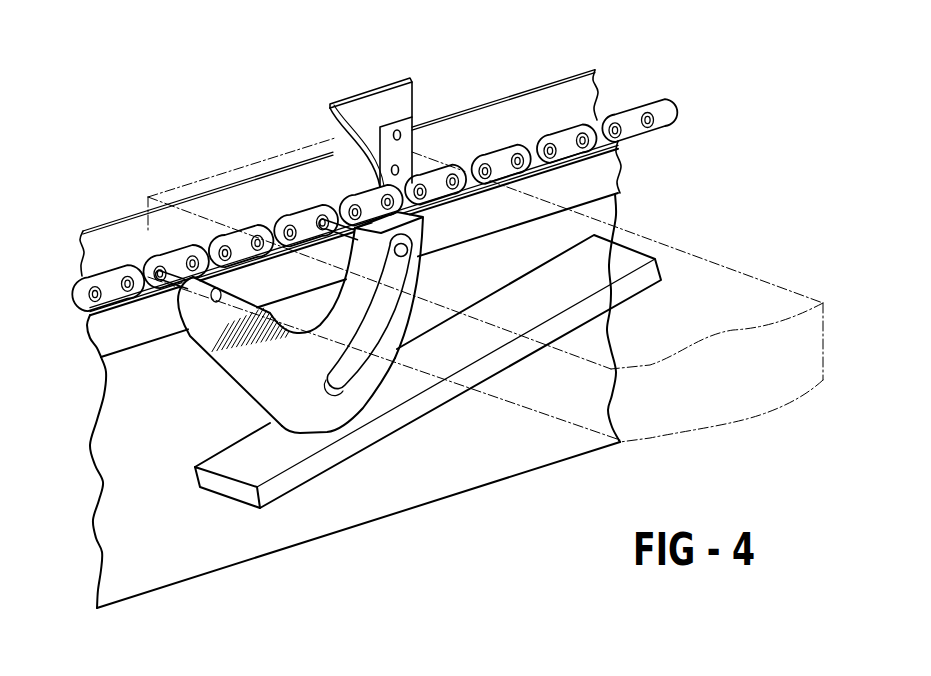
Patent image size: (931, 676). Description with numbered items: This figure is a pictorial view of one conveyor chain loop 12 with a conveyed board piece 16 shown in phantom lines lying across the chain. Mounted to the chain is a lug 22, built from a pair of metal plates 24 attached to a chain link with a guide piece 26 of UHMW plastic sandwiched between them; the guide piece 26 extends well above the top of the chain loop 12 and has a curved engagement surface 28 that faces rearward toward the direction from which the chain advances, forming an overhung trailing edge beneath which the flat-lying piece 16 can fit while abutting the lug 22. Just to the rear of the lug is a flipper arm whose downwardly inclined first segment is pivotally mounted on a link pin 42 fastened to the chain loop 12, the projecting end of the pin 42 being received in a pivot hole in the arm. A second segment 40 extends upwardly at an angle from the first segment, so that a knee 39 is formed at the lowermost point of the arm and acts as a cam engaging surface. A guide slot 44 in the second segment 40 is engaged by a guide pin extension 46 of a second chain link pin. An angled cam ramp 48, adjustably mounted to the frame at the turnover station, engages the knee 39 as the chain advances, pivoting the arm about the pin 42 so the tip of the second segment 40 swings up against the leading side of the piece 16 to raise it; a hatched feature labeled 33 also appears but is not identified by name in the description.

The conveyor chain loop 12 is at (123, 260).
The piece of lumber 16 is at (240, 170).
The lug 22 is at (368, 108).
The metal plates 24 is at (418, 126).
The guide piece 26 is at (331, 109).
The curved engagement surface 28 is at (322, 112).
The weld region 33 is at (205, 342).
The knee 39 is at (340, 432).
The second segment 40 is at (319, 356).
The link pin 42 is at (177, 268).
The guide slot 44 is at (343, 356).
The guide pin extension 46 is at (333, 215).
The angled cam ramp 48 is at (236, 468).